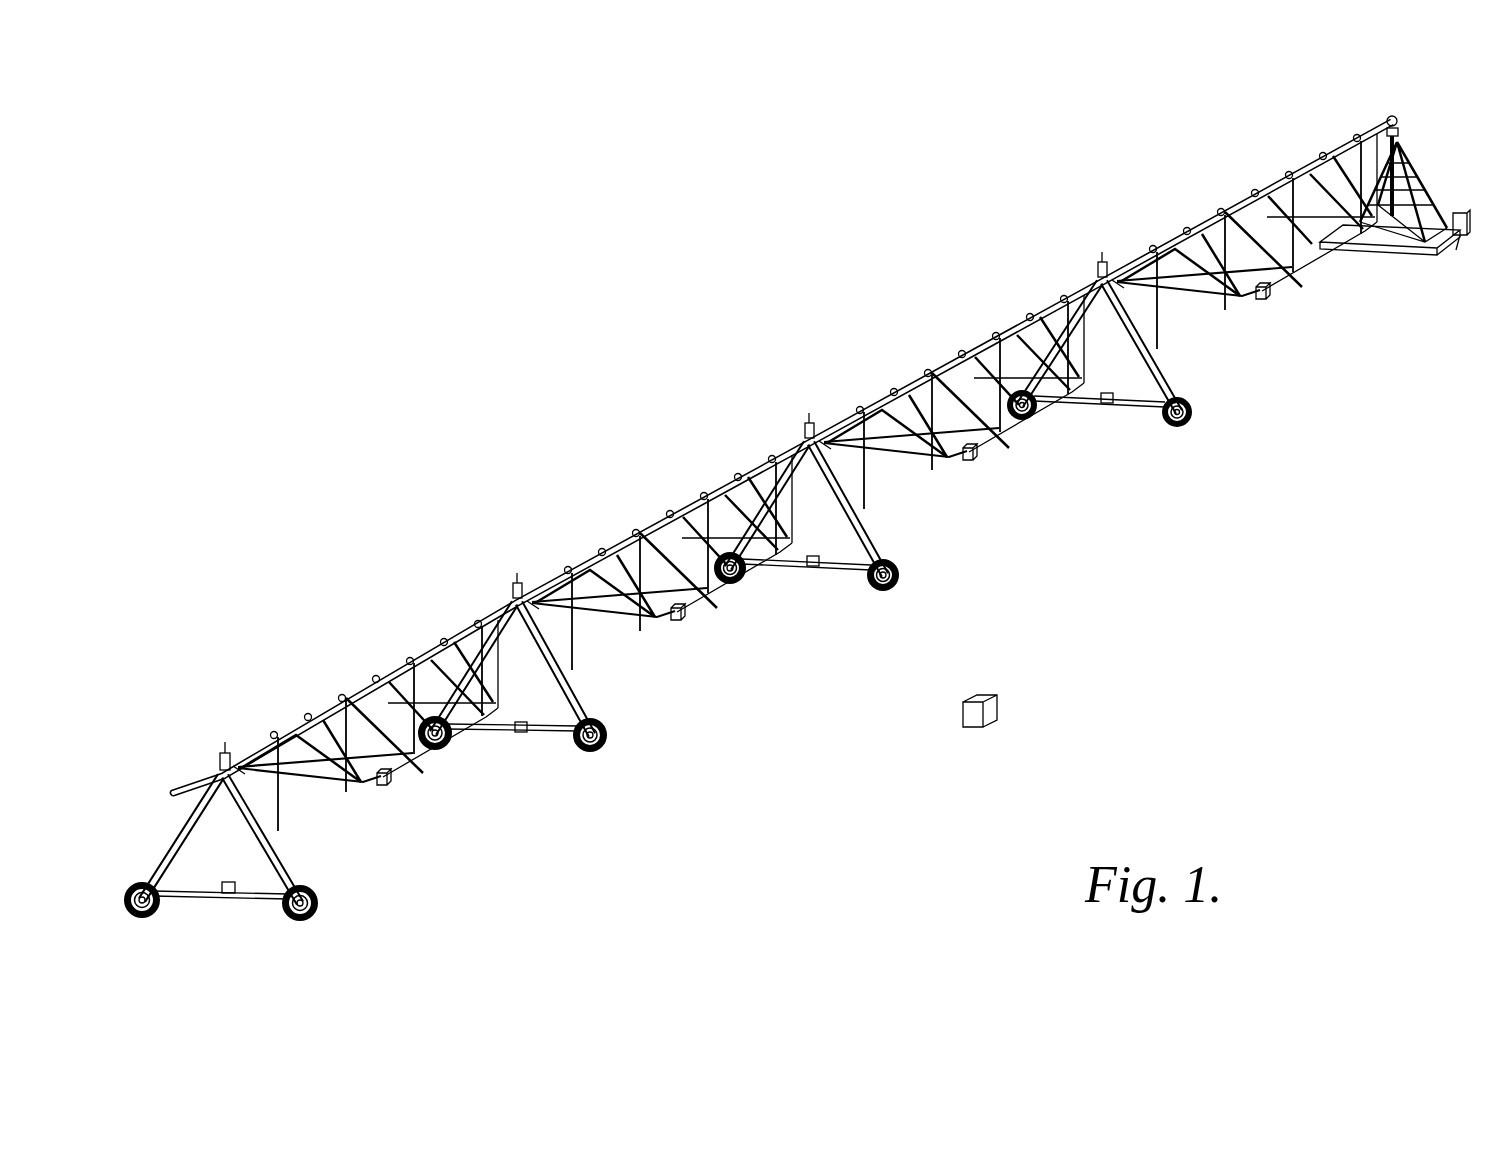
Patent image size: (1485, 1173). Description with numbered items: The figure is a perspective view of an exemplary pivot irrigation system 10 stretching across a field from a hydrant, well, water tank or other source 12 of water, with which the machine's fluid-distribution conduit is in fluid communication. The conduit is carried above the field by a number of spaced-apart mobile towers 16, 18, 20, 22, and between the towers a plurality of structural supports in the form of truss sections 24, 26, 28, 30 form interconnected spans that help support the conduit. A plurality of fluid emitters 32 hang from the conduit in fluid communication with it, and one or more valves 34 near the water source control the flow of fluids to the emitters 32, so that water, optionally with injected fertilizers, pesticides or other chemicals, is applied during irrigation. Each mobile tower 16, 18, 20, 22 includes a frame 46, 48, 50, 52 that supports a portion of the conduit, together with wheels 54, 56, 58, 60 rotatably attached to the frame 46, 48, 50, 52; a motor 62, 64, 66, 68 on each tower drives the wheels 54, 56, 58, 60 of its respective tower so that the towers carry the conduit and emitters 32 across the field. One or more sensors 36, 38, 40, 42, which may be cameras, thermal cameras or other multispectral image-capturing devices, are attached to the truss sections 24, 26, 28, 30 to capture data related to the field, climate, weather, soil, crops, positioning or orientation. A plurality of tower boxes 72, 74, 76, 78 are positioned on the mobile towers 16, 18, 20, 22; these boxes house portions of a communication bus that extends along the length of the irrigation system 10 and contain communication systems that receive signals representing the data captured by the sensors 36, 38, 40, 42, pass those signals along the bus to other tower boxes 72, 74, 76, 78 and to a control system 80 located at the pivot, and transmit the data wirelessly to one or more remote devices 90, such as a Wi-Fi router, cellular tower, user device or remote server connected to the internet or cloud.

The irrigation system 10 is at (781, 530).
The source of water 12 is at (1380, 190).
The mobile tower 16 is at (251, 817).
The mobile tower 18 is at (565, 645).
The mobile tower 20 is at (855, 474).
The mobile tower 22 is at (1141, 312).
The truss section 24 is at (406, 729).
The truss section 26 is at (691, 565).
The truss section 28 is at (982, 405).
The truss section 30 is at (1271, 237).
The fluid emitters 32 is at (348, 792).
The valve 34 is at (1390, 116).
The sensor 36 is at (392, 778).
The sensor 38 is at (684, 616).
The sensor 40 is at (977, 452).
The sensor 42 is at (1272, 290).
The frame 46 is at (285, 857).
The frame 48 is at (578, 697).
The frame 50 is at (868, 520).
The frame 52 is at (1178, 365).
The wheels 54 is at (318, 905).
The wheel 56 is at (612, 740).
The wheel 58 is at (900, 578).
The wheel 60 is at (1193, 425).
The motor 62 is at (232, 892).
The motor 64 is at (523, 733).
The motor 66 is at (815, 572).
The motor 68 is at (1107, 408).
The tower box 72 is at (217, 757).
The tower box 74 is at (513, 588).
The tower box 76 is at (805, 428).
The tower box 78 is at (1100, 262).
The control system 80 is at (1460, 238).
The remote device 90 is at (985, 722).